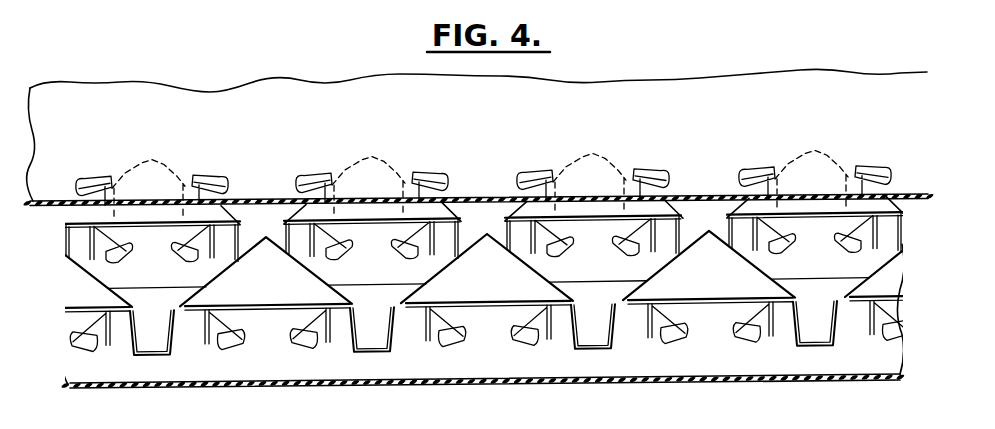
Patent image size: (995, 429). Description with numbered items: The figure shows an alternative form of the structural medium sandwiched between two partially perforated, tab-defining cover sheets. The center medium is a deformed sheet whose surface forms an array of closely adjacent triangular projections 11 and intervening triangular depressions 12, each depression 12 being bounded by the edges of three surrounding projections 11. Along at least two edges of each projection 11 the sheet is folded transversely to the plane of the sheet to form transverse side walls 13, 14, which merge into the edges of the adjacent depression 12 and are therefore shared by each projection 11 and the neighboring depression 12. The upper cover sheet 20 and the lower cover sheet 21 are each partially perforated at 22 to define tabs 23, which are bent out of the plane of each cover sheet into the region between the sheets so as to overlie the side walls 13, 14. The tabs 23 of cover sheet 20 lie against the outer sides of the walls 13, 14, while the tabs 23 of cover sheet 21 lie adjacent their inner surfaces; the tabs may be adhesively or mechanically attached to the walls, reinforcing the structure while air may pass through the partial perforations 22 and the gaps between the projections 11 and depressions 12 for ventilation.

The projections 11 is at (279, 282).
The depressions 12 is at (365, 298).
The transverse side wall 13 is at (244, 236).
The transverse side wall 14 is at (83, 238).
The cover sheet 20 is at (692, 93).
The cover sheet 21 is at (298, 363).
The partial perforations 22 is at (330, 182).
The tabs 23 is at (145, 165).